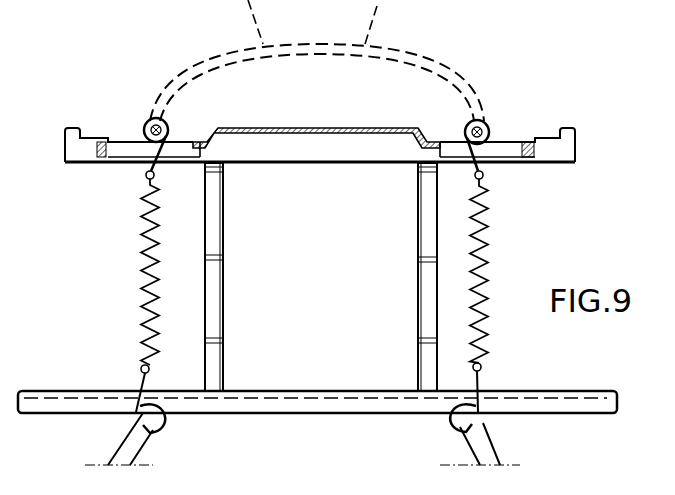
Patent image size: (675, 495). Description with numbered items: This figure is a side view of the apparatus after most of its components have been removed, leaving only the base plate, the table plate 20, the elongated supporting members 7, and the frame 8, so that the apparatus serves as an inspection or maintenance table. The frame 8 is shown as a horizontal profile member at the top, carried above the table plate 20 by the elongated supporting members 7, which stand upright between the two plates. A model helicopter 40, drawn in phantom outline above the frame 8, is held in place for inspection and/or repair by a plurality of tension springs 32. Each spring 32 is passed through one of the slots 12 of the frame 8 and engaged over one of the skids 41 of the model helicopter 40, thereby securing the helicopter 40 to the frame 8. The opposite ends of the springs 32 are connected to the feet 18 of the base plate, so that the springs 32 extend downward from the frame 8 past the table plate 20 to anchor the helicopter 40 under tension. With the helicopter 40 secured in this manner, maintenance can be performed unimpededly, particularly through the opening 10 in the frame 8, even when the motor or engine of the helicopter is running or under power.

The frame 8 is at (563, 113).
The opening 10 is at (377, 143).
The slots 12 is at (122, 147).
The model helicopter 40 is at (358, 15).
The skids 41 is at (152, 117).
The elongated supporting members 7 is at (215, 243).
The tension springs 32 is at (142, 282).
The table plate 20 is at (360, 407).
The feet 18 is at (145, 453).